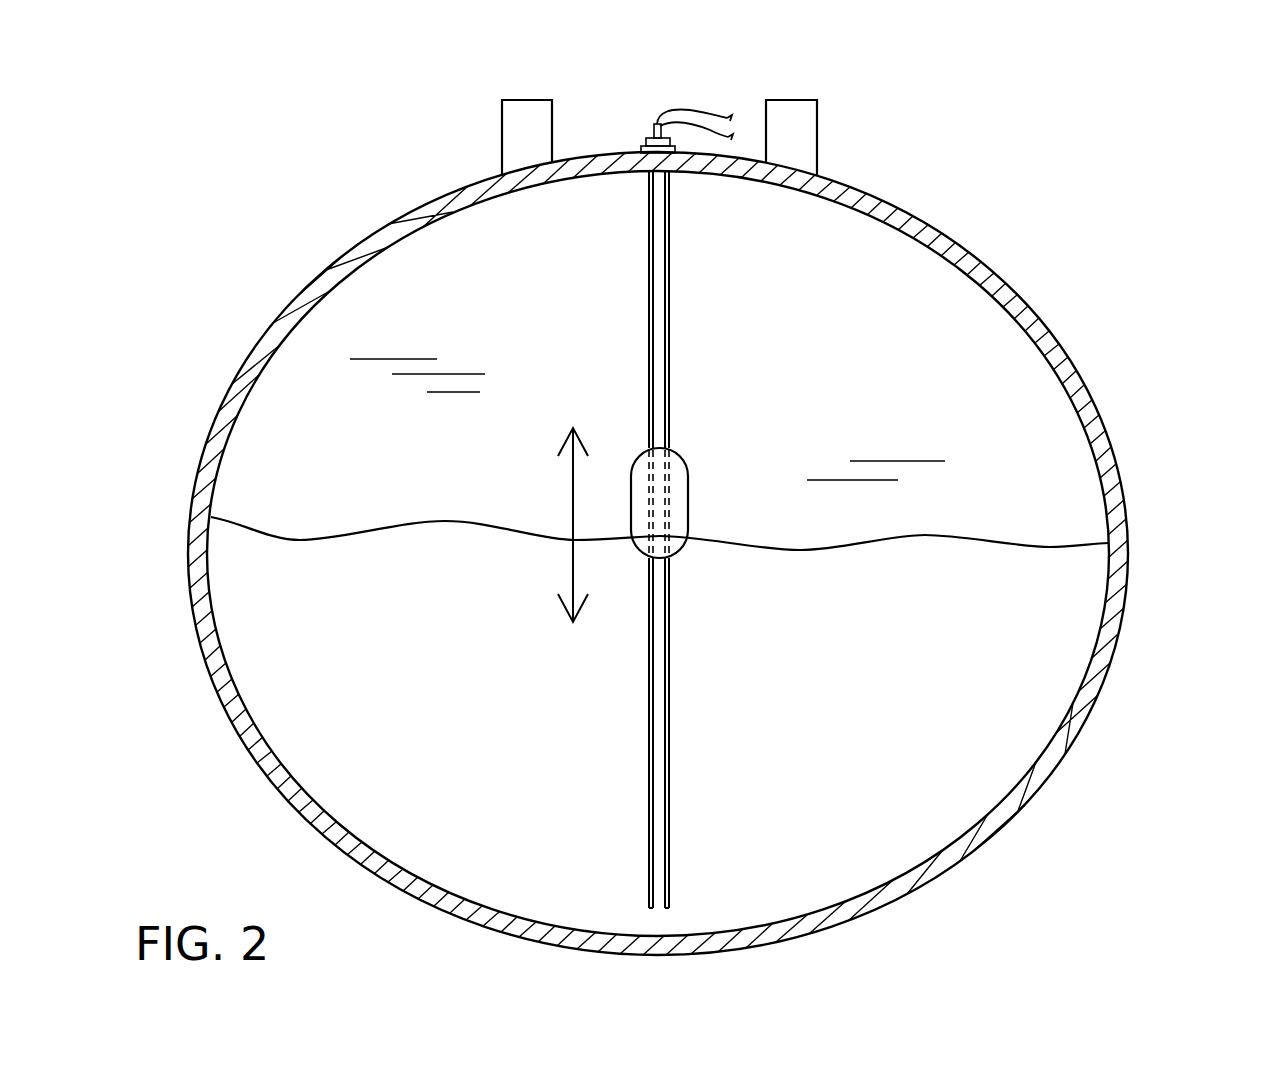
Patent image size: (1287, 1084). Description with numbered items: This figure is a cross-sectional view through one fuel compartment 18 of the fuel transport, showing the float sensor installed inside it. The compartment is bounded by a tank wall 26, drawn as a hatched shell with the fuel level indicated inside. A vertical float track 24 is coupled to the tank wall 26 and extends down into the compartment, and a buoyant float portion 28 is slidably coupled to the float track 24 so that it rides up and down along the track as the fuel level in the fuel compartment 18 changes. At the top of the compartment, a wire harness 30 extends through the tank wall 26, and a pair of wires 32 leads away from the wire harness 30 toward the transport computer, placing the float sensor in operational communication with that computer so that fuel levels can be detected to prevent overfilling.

The fuel compartment 18 is at (1050, 485).
The vertical float track 24 is at (669, 338).
The tank wall 26 is at (893, 218).
The buoyant float portion 28 is at (678, 500).
The wire harness 30 is at (637, 147).
The pair of wires 32 is at (700, 114).